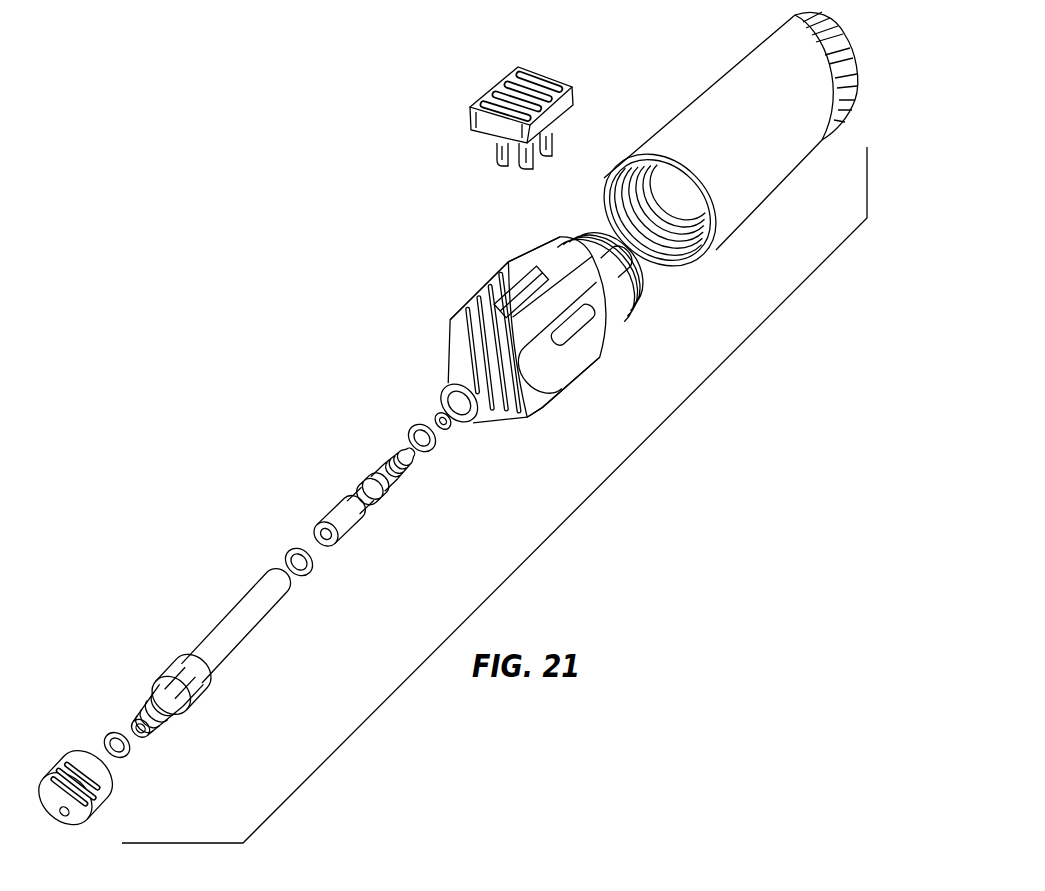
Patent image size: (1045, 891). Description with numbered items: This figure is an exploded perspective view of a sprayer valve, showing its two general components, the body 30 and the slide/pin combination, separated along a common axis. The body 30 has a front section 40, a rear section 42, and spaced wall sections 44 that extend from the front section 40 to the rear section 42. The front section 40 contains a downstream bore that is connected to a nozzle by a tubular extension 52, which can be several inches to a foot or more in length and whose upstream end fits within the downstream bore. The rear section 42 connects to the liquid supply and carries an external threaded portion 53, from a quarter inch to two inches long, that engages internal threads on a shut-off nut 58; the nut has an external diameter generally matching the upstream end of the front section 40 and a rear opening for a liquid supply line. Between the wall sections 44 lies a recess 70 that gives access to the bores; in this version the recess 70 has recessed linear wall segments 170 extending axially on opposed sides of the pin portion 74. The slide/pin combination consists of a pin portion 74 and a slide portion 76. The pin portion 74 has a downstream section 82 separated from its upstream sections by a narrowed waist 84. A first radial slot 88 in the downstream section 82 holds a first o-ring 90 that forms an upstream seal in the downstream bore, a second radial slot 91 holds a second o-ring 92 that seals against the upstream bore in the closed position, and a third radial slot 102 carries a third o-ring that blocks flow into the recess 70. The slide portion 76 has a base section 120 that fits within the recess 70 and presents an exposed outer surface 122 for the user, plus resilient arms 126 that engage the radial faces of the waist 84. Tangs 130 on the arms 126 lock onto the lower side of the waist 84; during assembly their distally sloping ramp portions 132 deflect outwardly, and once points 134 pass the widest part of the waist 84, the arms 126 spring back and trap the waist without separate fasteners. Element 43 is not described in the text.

The body 30 is at (525, 344).
The front section 40 is at (510, 430).
The rear section 42 is at (526, 270).
The rear nub 43 is at (626, 256).
The spaced wall sections 44 is at (522, 282).
The tubular extension 52 is at (254, 632).
The external threaded portion 53 is at (621, 302).
The shut-off nut 58 is at (765, 197).
The recess 70 is at (470, 320).
The pin portion 74 is at (349, 499).
The slide portion 76 is at (515, 123).
The downstream section 82 is at (377, 476).
The narrowed waist 84 is at (358, 491).
The first radial slot 88 is at (338, 542).
The first o-ring 90 is at (308, 576).
The second radial slot 91 is at (394, 457).
The second o-ring 92 is at (449, 432).
The third radial slot 102 is at (431, 452).
The base section 120 is at (506, 90).
The exposed outer surface 122 is at (532, 70).
The resilient arms 126 is at (489, 180).
The tangs 130 is at (524, 168).
The ramp portions 132 is at (500, 165).
The points 134 is at (542, 158).
The recessed linear wall segments 170 is at (506, 300).